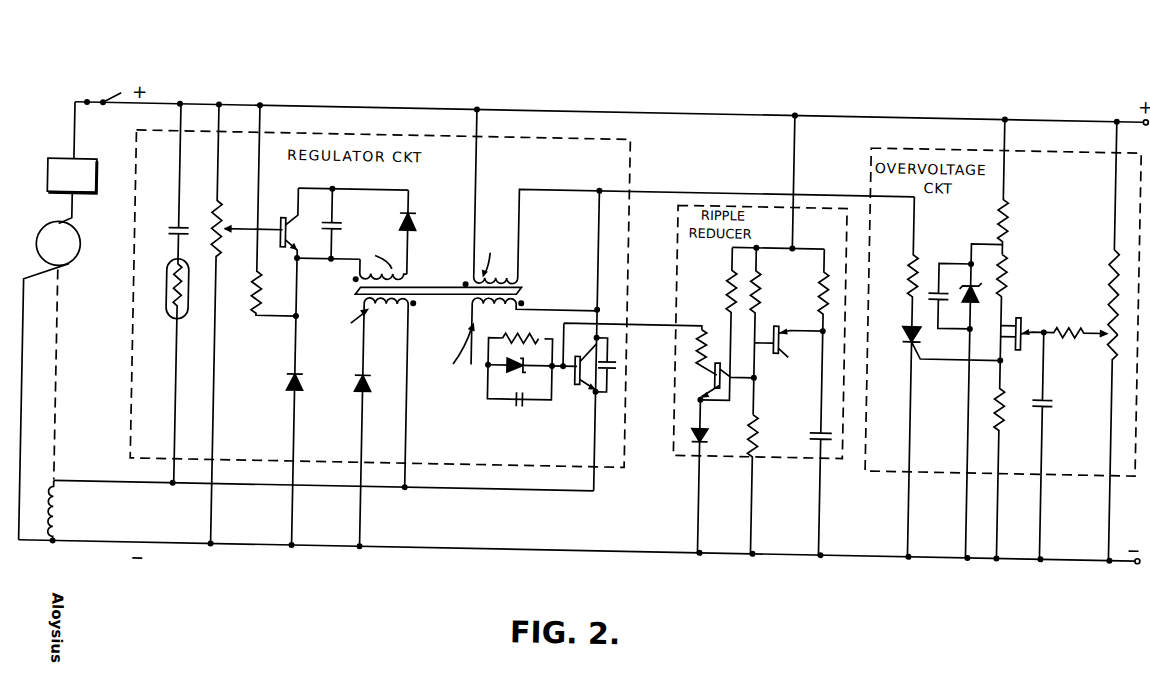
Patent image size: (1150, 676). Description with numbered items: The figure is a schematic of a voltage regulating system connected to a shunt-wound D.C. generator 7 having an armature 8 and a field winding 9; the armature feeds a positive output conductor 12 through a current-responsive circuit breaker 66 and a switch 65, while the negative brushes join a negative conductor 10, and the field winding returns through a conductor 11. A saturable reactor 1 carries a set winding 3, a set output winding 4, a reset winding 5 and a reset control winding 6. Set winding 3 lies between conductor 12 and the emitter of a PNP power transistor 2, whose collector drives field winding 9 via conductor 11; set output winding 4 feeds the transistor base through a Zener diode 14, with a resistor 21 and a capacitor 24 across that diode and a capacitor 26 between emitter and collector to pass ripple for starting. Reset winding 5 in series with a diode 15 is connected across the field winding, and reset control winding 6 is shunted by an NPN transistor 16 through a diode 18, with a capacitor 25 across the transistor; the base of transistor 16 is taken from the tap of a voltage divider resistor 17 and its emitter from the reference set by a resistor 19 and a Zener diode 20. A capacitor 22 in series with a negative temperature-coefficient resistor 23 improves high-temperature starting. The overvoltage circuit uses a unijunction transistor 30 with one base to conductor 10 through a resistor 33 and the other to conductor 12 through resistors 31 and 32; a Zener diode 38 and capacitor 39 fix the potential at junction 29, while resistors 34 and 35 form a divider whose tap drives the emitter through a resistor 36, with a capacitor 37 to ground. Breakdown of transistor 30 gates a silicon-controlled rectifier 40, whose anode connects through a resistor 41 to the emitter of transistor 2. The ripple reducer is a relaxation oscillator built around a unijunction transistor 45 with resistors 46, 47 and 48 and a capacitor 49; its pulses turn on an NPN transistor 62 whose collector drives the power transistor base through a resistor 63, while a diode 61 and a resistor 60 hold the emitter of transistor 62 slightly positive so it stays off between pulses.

The saturable reactor 1 is at (534, 284).
The power transistor 2 is at (586, 378).
The set winding 3 is at (514, 267).
The set output winding 4 is at (494, 302).
The reset winding 5 is at (392, 305).
The reset control winding 6 is at (407, 271).
The shunt-wound D.C. generator 7 is at (68, 408).
The armature 8 is at (70, 262).
The field winding 9 is at (66, 517).
The negative conductor 10 is at (310, 545).
The conductor 11 is at (302, 484).
The positive output conductor 12 is at (380, 102).
The Zener diode 14 is at (521, 362).
The semiconductor diode 15 is at (364, 384).
The transistor 16 is at (282, 216).
The voltage divider resistor 17 is at (215, 222).
The semiconductor diode 18 is at (413, 215).
The resistor 19 is at (266, 286).
The Zener diode 20 is at (294, 386).
The resistor 21 is at (530, 331).
The capacitor 22 is at (173, 224).
The negative temperature-coefficient resistor 23 is at (186, 311).
The capacitor 24 is at (523, 388).
The capacitor 25 is at (330, 236).
The capacitor 26 is at (622, 357).
The junction 29 is at (1007, 228).
The unijunction transistor 30 is at (1026, 302).
The resistor 31 is at (1010, 207).
The resistor 32 is at (1010, 270).
The resistor 33 is at (1009, 385).
The resistor 34 is at (1112, 262).
The resistor 35 is at (1112, 336).
The resistor 36 is at (1086, 310).
The capacitor 37 is at (1052, 384).
The Zener diode 38 is at (980, 283).
The capacitor 39 is at (932, 272).
The silicon-controlled rectifier 40 is at (914, 314).
The resistor 41 is at (914, 268).
The unijunction transistor 45 is at (793, 344).
The resistor 46 is at (764, 284).
The resistor 47 is at (755, 421).
The resistor 48 is at (824, 288).
The capacitor 49 is at (818, 418).
The resistor 60 is at (732, 280).
The semiconductor diode 61 is at (712, 422).
The transistor 62 is at (722, 351).
The resistor 63 is at (700, 336).
The switch 65 is at (96, 99).
The current-responsive circuit breaker 66 is at (64, 158).